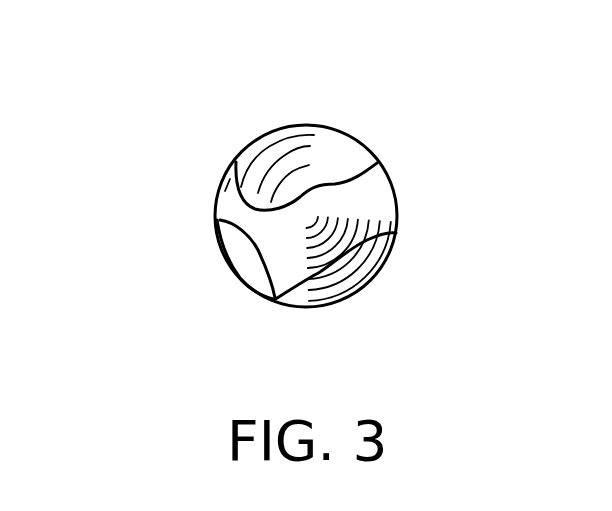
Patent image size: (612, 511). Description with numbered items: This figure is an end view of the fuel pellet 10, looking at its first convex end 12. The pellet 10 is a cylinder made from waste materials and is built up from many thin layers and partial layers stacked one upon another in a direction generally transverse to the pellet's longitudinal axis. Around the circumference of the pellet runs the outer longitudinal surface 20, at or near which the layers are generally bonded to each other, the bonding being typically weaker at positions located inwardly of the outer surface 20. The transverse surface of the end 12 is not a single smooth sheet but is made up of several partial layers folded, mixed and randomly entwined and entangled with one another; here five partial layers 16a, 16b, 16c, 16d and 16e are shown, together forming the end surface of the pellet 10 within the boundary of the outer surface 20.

The fuel pellet 10 is at (243, 310).
The first convex end 12 is at (363, 181).
The partial layer 16a is at (255, 163).
The partial layer 16b is at (270, 223).
The partial layer 16c is at (255, 249).
The partial layer 16d is at (243, 273).
The partial layer 16e is at (297, 306).
The outer longitudinal surface 20 is at (332, 128).